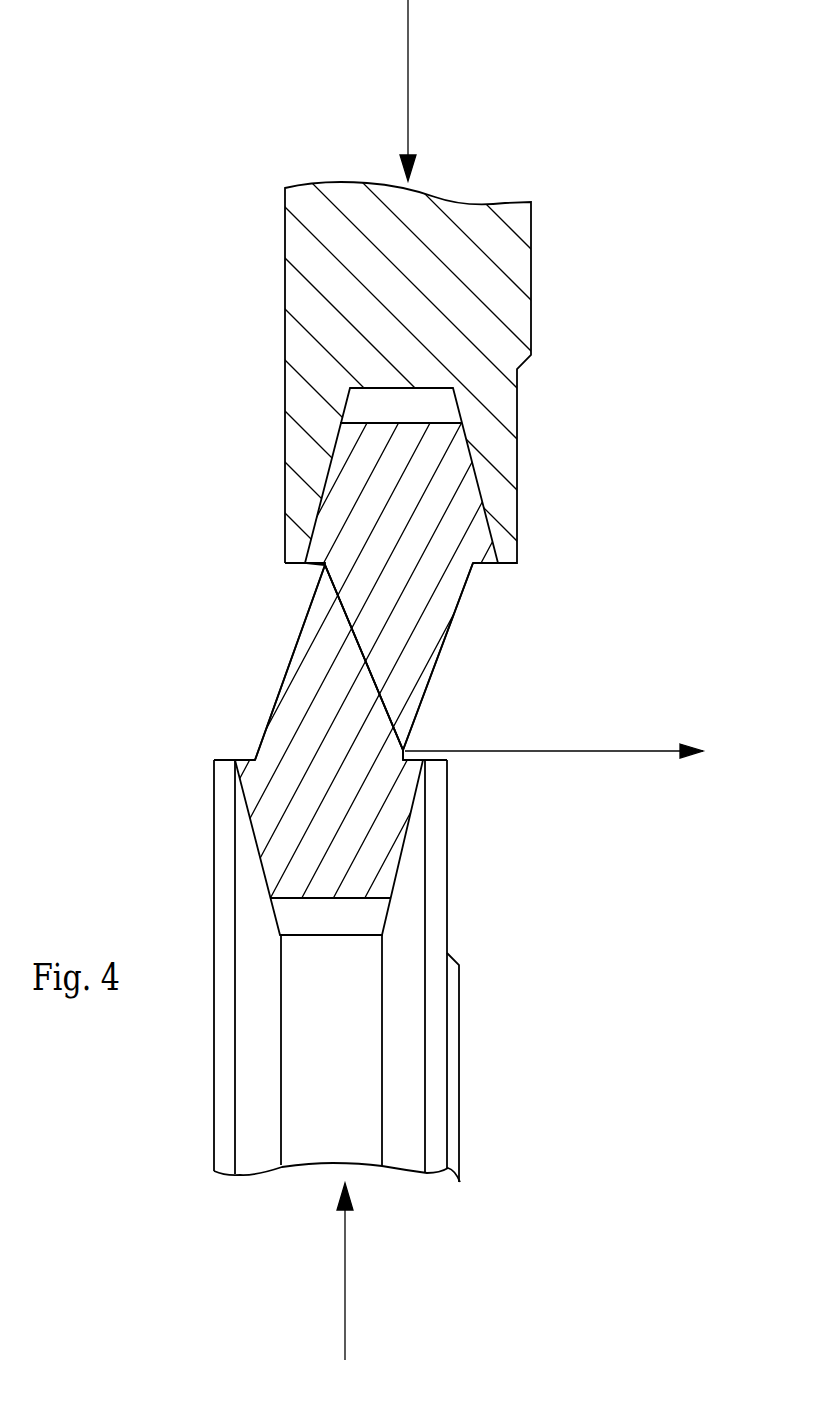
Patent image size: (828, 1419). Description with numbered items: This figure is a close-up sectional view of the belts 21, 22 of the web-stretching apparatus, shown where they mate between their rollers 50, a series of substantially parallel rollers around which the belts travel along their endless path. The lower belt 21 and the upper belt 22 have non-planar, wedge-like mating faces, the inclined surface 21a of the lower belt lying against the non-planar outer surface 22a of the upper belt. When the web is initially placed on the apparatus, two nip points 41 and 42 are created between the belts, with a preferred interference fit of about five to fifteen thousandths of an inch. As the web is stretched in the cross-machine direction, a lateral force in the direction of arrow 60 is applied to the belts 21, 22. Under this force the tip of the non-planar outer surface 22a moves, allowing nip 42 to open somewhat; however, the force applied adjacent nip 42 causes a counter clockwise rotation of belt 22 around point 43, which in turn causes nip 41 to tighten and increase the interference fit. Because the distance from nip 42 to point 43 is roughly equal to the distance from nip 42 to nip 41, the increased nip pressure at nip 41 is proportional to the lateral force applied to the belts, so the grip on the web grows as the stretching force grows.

The belt 21 is at (347, 845).
The belt 22 is at (428, 527).
The inclined face of lower punch 21a is at (355, 678).
The non-planar outer surface 22a is at (430, 672).
The nip point 41 is at (325, 567).
The nip point 42 is at (404, 749).
The point 43 is at (498, 565).
The roller 50 is at (483, 410).
The arrow 60 is at (571, 750).